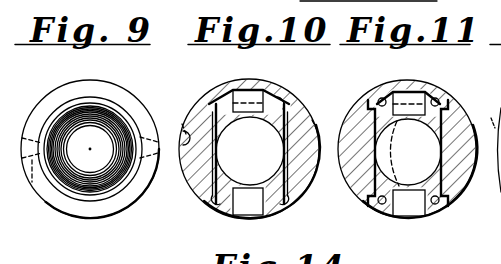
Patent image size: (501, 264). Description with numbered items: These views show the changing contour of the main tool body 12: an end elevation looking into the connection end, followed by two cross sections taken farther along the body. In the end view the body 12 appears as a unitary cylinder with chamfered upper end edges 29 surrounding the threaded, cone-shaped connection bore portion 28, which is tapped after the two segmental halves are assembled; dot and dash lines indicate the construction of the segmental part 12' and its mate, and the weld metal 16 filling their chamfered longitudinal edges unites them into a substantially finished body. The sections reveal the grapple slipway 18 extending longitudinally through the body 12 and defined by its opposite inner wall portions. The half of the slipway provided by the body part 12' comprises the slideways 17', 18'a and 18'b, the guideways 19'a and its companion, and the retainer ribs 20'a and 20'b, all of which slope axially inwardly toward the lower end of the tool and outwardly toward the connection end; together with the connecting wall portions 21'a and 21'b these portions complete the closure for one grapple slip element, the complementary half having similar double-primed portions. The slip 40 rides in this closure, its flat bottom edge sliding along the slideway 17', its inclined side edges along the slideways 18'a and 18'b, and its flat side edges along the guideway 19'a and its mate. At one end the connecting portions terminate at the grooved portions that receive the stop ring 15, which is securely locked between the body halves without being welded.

In FIG. 9, the body 12 is at (90, 141).
In FIG. 10, the body 12 is at (249, 142).
In FIG. 11, the segmental body part 12' is at (415, 151).
In FIG. 10, the stop ring 15 is at (231, 120).
In FIG. 11, the stop ring 15 is at (441, 137).
In FIG. 9, the weld metal 16 is at (32, 190).
In FIG. 10, the weld metal 16 is at (182, 125).
In FIG. 11, the weld metal 16 is at (497, 126).
In FIG. 11, the slideway 17' is at (408, 132).
In FIG. 10, the grapple slipway 18 is at (249, 136).
In FIG. 11, the slideway 18'a is at (365, 83).
In FIG. 11, the slideway 18'b is at (458, 83).
In FIG. 11, the guideway 19'a is at (366, 91).
In FIG. 10, the retainer rib 20'a is at (234, 151).
In FIG. 10, the retainer rib 20'b is at (298, 87).
In FIG. 10, the connecting wall portion 21'a is at (182, 110).
In FIG. 10, the connecting wall portion 21'b is at (312, 93).
In FIG. 9, the connection bore portion 28 is at (91, 188).
In FIG. 9, the chamfered upper end edges 29 is at (55, 97).
In FIG. 11, the slip 40 is at (390, 153).